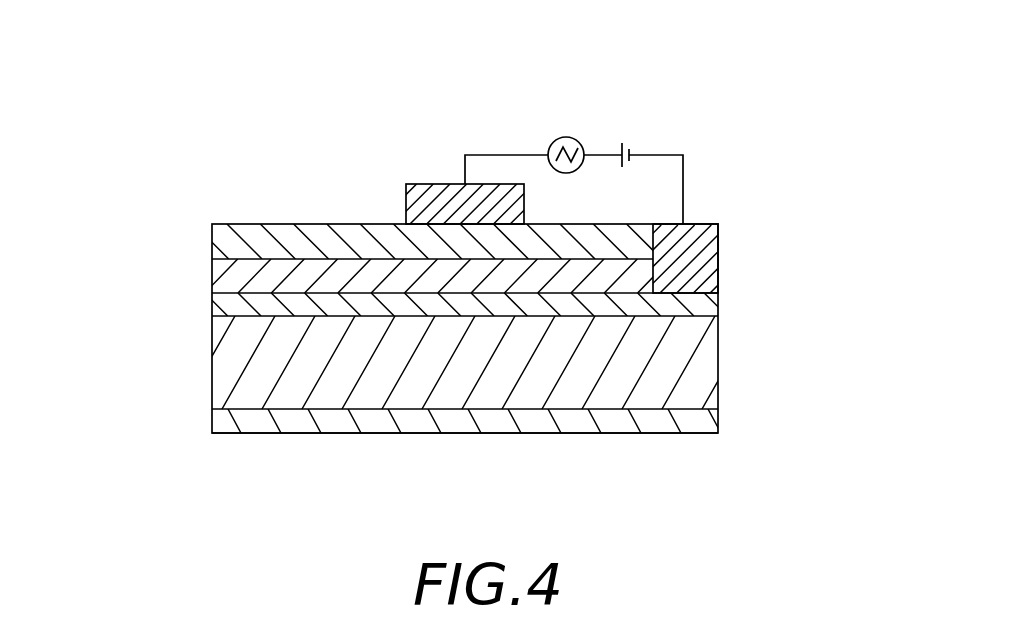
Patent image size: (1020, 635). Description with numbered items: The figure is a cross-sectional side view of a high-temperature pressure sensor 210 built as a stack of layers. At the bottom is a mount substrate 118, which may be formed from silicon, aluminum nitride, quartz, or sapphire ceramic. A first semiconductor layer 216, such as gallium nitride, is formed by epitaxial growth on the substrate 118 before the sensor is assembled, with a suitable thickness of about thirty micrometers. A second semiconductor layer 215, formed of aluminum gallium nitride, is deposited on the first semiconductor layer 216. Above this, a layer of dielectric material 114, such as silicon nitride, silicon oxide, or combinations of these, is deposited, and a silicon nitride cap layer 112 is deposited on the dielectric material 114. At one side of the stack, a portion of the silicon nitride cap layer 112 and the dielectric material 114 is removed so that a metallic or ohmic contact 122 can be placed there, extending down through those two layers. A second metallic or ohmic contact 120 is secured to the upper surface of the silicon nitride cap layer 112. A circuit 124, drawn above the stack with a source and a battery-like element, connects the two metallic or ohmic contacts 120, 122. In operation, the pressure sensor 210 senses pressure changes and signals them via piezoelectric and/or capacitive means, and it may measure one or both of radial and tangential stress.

The silicon nitride cap layer 112 is at (212, 242).
The dielectric material 114 is at (212, 272).
The second semiconductor layer 215 is at (212, 305).
The first semiconductor layer 216 is at (708, 347).
The mount substrate 118 is at (672, 423).
The metallic or ohmic contact 120 is at (415, 185).
The metallic or ohmic contact 122 is at (712, 253).
The circuit 124 is at (517, 155).
The high-temperature pressure sensor 210 is at (738, 199).